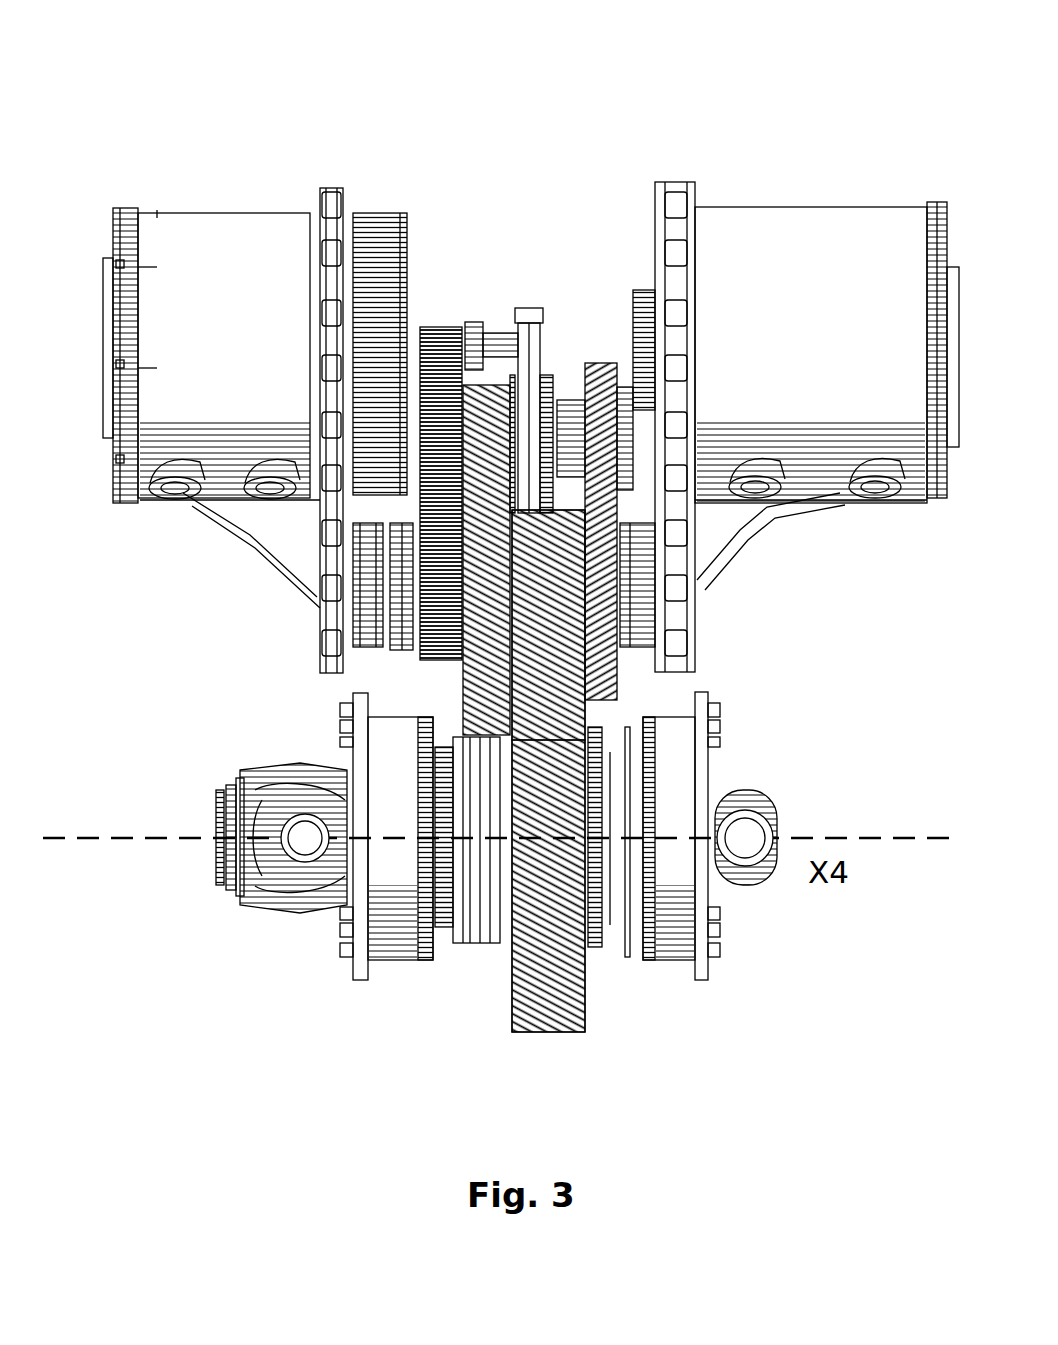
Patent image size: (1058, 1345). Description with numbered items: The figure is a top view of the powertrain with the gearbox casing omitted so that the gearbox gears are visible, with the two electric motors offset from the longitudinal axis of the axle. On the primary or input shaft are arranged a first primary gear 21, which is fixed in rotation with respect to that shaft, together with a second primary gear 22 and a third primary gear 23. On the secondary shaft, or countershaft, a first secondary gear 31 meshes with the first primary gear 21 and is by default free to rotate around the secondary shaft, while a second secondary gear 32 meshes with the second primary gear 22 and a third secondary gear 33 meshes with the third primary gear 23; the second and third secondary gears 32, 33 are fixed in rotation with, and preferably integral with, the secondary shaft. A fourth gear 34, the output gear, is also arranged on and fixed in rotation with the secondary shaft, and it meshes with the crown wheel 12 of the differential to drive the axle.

The crown wheel 12 is at (540, 1003).
The first primary gear 21 is at (438, 333).
The second primary gear 22 is at (488, 395).
The third primary gear 23 is at (600, 400).
The first secondary gear 31 is at (440, 580).
The second secondary gear 32 is at (475, 700).
The third secondary gear 33 is at (598, 593).
The fourth gear 34 is at (553, 630).